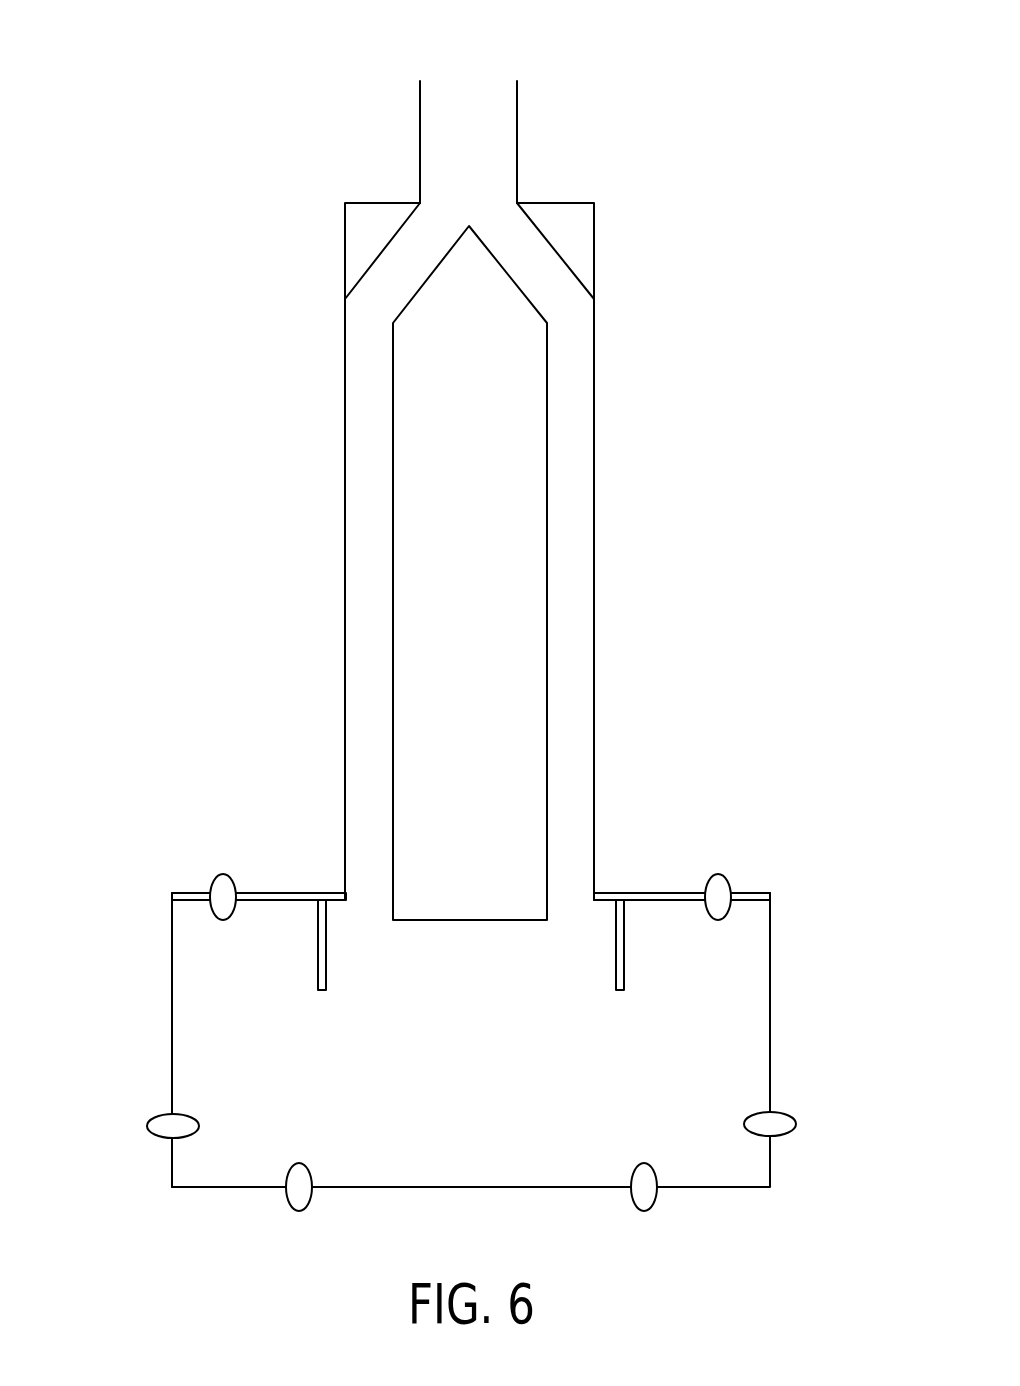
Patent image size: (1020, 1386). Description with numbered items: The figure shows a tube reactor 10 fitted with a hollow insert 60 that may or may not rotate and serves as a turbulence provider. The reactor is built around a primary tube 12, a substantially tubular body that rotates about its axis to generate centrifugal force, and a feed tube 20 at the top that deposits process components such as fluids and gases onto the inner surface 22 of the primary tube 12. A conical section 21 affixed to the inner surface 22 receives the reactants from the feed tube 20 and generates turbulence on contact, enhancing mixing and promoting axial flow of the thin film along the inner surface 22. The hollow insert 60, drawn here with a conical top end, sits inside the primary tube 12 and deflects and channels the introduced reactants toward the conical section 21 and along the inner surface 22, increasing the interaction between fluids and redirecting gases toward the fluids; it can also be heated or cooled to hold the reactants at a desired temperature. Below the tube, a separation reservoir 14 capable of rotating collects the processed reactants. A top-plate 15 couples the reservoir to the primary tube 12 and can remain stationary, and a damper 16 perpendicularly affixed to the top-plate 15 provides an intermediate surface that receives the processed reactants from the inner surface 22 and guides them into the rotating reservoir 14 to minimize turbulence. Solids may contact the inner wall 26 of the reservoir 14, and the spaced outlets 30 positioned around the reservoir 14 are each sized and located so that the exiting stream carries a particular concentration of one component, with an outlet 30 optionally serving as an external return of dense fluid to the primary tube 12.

The tube reactor 10 is at (665, 97).
The feed tube 20 is at (517, 107).
The conical section 21 is at (375, 258).
The primary tube 12 is at (344, 483).
The inner surface 22 is at (596, 505).
The hollow insert 60 is at (487, 605).
The top-plate 15 is at (280, 893).
The damper 16 is at (327, 960).
The inner wall 26 is at (173, 1062).
The separation reservoir 14 is at (772, 1020).
The outlets 30 is at (223, 874).